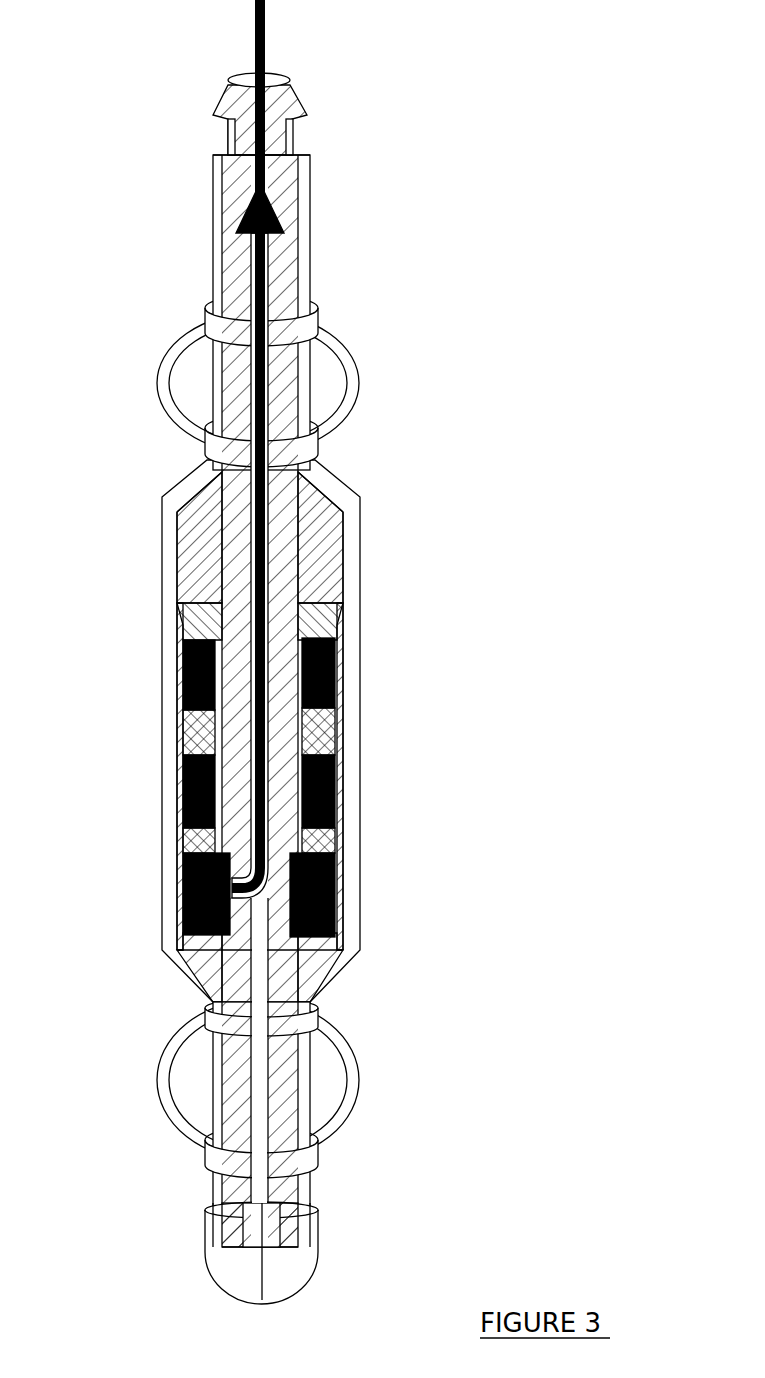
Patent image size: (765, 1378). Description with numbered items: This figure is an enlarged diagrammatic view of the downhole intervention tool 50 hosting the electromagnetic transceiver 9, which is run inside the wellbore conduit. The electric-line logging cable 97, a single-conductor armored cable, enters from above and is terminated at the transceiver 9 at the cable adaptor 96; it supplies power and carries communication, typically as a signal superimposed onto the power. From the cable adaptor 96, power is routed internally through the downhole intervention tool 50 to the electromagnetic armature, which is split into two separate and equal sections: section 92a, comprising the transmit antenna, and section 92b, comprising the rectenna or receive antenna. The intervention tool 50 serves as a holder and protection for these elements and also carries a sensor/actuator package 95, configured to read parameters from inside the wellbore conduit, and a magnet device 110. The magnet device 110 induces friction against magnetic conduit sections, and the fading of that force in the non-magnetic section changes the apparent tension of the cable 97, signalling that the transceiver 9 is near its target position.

The electric-line logging cable 97 is at (255, 29).
The cable adaptor 96 is at (233, 187).
The downhole intervention tool 50 is at (287, 281).
The magnet device 110 is at (197, 552).
The sensor/actuator package 95 is at (200, 627).
The electromagnetic armature section b 92b is at (180, 663).
The electromagnetic armature section a 92a is at (180, 795).
The electromagnetic transceiver 9 is at (180, 893).